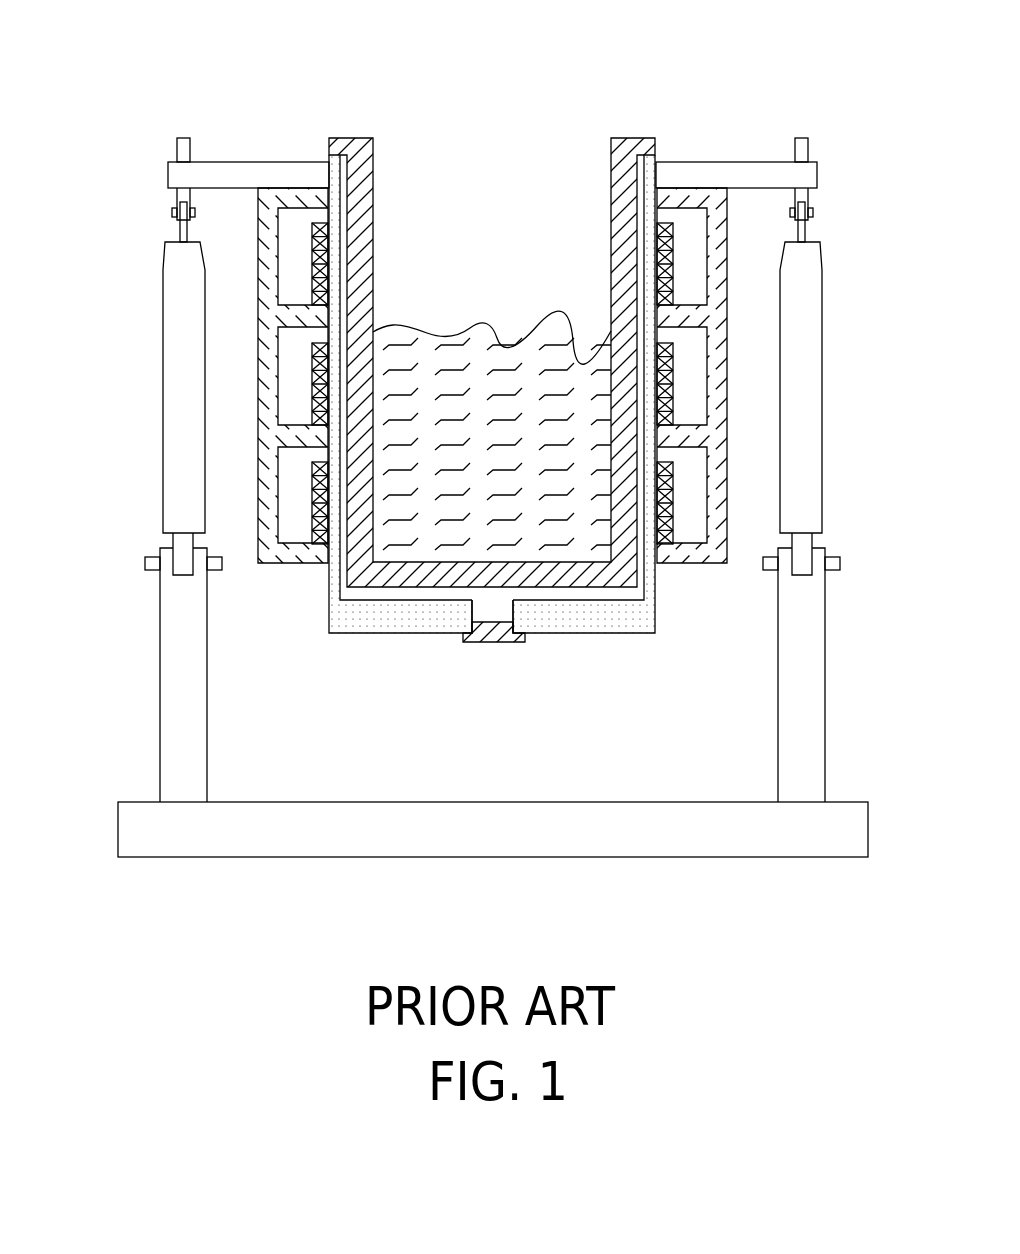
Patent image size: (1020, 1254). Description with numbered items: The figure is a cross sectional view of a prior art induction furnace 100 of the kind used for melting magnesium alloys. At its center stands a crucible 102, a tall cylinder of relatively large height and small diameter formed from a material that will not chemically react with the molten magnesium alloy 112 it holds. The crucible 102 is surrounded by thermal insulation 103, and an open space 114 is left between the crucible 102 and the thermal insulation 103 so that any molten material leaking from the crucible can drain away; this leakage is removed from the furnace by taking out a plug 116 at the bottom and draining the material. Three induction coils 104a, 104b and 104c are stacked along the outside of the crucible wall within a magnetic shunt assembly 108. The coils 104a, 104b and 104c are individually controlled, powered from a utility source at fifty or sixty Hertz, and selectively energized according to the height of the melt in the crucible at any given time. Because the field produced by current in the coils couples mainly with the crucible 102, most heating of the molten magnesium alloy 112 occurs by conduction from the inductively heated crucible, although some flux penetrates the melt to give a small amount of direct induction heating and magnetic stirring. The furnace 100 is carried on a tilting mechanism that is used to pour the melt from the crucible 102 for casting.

The furnace 100 is at (583, 76).
The crucible 102 is at (639, 150).
The thermal insulation 103 is at (630, 615).
The induction coil 104a is at (318, 503).
The induction coil 104b is at (318, 385).
The induction coil 104c is at (318, 268).
The magnetic shunt assembly 108 is at (283, 564).
The molten magnesium alloy 112 is at (448, 365).
The open space 114 is at (498, 602).
The plug 116 is at (480, 636).